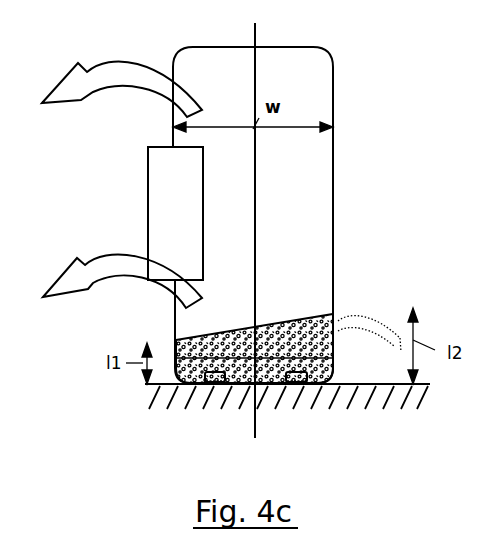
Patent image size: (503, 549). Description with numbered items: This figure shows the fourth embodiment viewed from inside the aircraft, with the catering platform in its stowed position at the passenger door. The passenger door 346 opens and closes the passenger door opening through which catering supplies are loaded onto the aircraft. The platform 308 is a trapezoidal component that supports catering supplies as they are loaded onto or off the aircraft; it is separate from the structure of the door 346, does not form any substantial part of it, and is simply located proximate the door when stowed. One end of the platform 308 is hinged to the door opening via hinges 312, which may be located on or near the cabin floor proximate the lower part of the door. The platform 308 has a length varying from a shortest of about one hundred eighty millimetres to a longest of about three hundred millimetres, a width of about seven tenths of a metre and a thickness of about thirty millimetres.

The passenger door 346 is at (293, 180).
The platform 308 is at (293, 330).
The hinges 312 is at (308, 383).